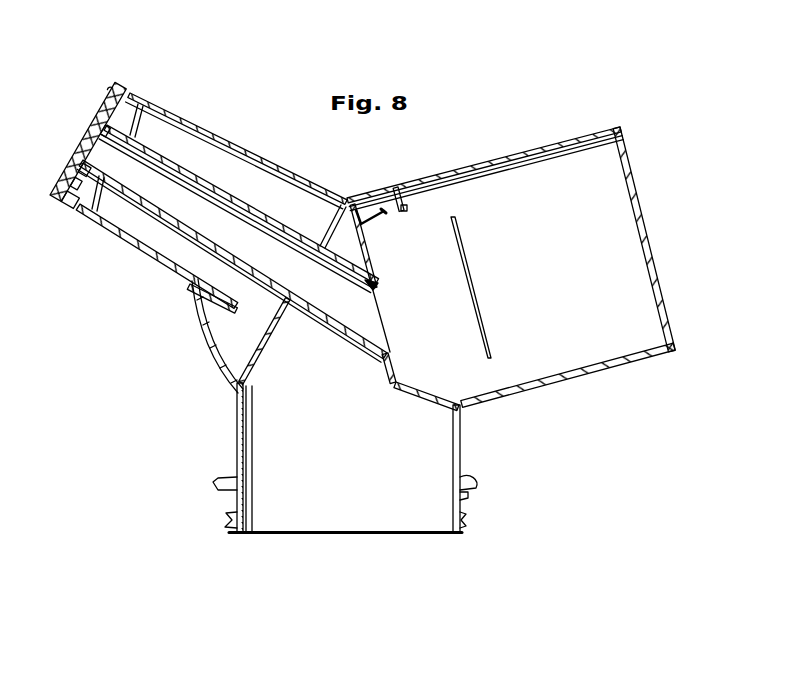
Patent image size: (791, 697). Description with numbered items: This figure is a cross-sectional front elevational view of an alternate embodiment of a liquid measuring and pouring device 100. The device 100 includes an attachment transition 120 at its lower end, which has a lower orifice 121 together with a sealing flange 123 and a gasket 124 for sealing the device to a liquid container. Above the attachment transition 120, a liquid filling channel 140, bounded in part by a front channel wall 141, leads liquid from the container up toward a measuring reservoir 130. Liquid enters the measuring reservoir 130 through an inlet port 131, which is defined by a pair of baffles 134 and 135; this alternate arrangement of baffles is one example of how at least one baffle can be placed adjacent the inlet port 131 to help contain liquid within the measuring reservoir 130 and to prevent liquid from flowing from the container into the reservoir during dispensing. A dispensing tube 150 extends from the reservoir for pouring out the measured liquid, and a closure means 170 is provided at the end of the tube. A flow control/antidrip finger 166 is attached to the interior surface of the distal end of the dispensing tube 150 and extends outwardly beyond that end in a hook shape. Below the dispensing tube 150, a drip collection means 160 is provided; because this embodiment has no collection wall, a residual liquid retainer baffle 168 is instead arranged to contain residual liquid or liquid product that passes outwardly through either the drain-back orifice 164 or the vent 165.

The liquid measuring and pouring device 100 is at (156, 354).
The attachment transition 120 is at (478, 462).
The lower orifice 121 is at (354, 530).
The sealing flange 123 is at (478, 483).
The gasket 124 is at (468, 496).
The measuring reservoir 130 is at (662, 224).
The inlet port 131 is at (391, 214).
The baffle 134 is at (408, 207).
The baffle 135 is at (366, 215).
The liquid filling channel 140 is at (368, 462).
The front channel wall 141 is at (251, 378).
The dispensing tube 150 is at (213, 182).
The drip collection means 160 is at (122, 244).
The drain-back orifice 164 is at (237, 381).
The vent 165 is at (265, 356).
The flow control/antidrip finger 166 is at (77, 168).
The residual liquid retainer baffle 168 is at (218, 301).
The closure means 170 is at (116, 68).